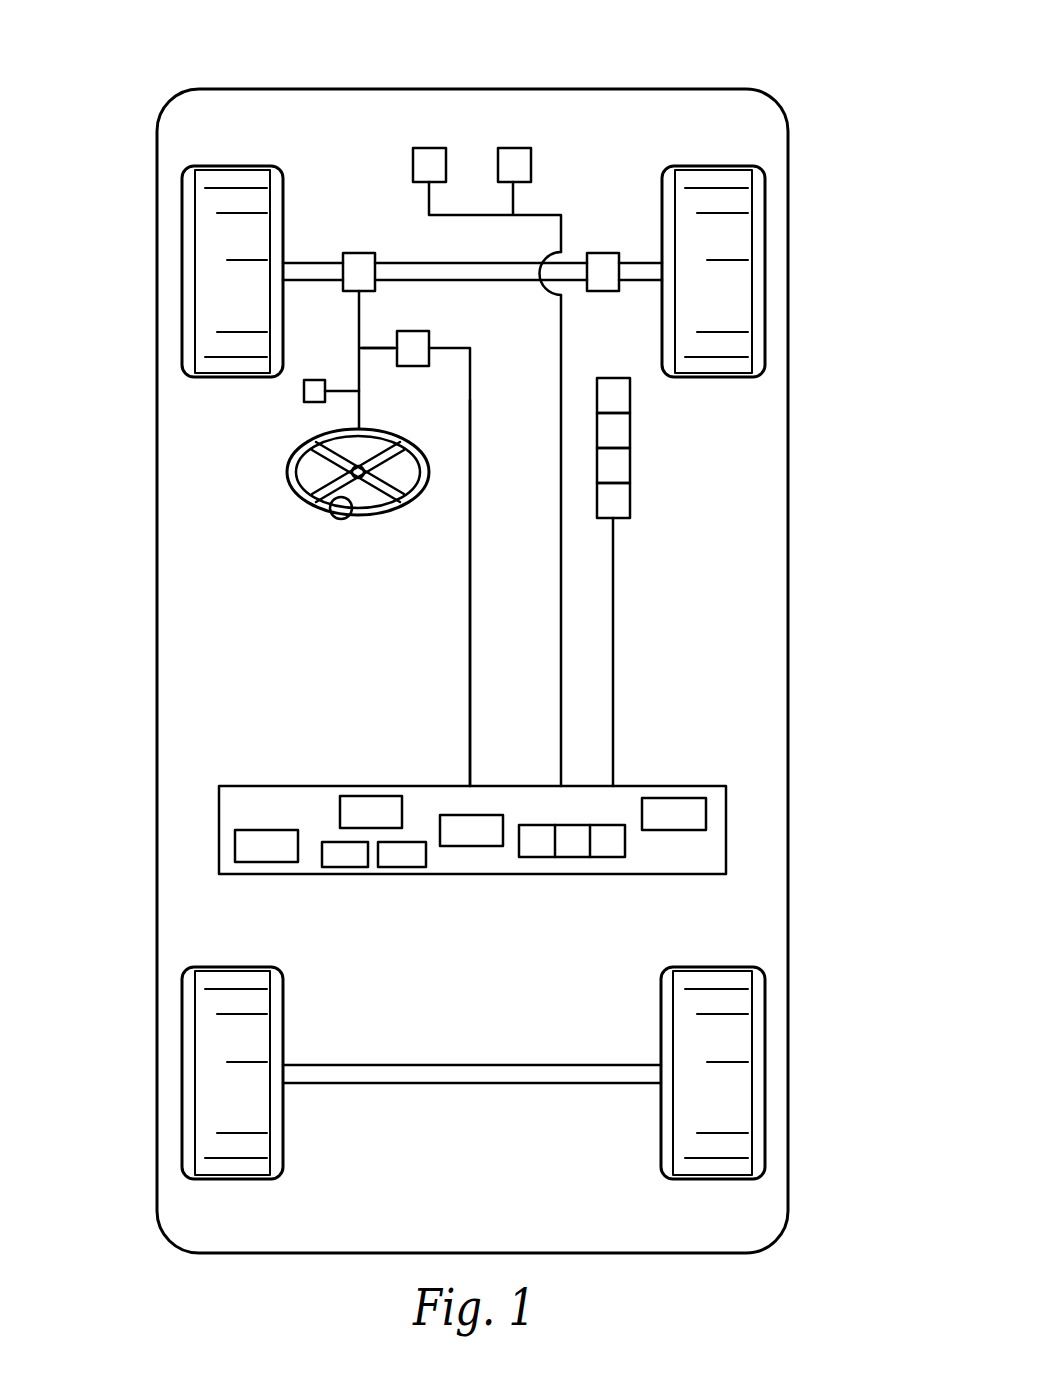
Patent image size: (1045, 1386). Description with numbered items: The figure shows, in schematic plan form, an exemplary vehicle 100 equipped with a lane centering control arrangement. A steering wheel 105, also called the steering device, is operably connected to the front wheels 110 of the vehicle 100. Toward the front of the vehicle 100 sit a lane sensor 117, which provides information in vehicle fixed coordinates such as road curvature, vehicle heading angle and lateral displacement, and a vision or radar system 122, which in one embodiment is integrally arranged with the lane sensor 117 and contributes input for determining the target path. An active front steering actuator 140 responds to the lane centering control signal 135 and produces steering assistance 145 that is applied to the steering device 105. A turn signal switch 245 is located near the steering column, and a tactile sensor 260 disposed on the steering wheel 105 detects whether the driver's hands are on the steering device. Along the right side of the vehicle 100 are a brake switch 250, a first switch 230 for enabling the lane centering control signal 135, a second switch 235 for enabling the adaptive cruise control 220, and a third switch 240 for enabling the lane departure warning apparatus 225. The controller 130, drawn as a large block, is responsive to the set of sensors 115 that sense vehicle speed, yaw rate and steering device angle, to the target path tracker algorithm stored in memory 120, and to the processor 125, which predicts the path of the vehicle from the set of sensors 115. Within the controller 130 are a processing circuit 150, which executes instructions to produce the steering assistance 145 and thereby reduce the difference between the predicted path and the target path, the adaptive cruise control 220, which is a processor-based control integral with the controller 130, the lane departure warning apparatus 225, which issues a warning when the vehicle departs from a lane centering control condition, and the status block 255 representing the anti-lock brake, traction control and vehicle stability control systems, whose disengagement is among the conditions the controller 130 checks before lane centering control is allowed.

The vehicle 100 is at (642, 70).
The steering wheel 105 is at (290, 478).
The front wheels 110 is at (176, 233).
The set of sensors 115 is at (635, 862).
The lane sensor 117 is at (513, 165).
The memory 120 is at (468, 840).
The vision or radar system 122 is at (429, 165).
The processor 125 is at (368, 808).
The controller 130 is at (290, 778).
The lane centering control signal 135 is at (472, 565).
The active front steering actuator 140 is at (412, 358).
The steering assistance 145 is at (383, 348).
The processing circuit 150 is at (268, 852).
The adaptive cruise control 220 is at (348, 858).
The lane departure warning apparatus 225 is at (668, 815).
The first switch 230 is at (620, 434).
The second switch 235 is at (630, 467).
The third switch 240 is at (625, 502).
The turn signal switch 245 is at (304, 391).
The brake switch 250 is at (617, 394).
The anti-lock brake system, traction control system and vehicle stability control sy 255 is at (398, 858).
The tactile sensor 260 is at (341, 519).